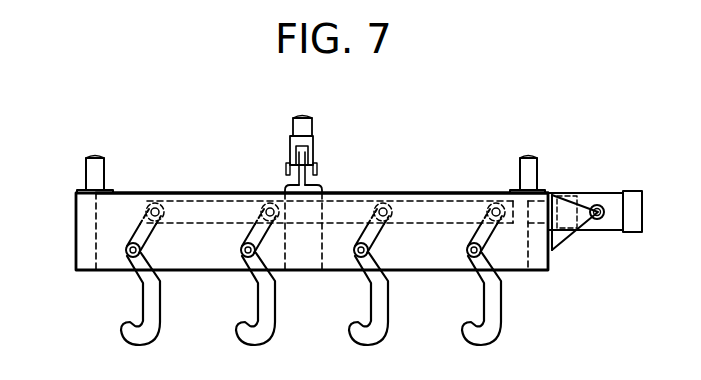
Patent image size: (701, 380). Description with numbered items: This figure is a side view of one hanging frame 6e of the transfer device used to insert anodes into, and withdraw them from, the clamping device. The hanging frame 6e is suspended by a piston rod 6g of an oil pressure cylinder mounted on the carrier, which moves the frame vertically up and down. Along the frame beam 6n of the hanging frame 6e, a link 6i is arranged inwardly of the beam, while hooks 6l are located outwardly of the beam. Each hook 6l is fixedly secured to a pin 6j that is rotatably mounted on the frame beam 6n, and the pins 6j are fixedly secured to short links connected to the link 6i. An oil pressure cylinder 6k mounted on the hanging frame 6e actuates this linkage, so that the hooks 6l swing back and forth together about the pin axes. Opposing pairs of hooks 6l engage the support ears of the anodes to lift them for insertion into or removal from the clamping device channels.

The hanging frame 6e is at (84, 222).
The frame beam 6n is at (130, 196).
The link 6i is at (433, 200).
The piston rod 6g is at (305, 130).
The oil pressure cylinder 6k is at (596, 230).
The pin 6j is at (141, 250).
The hook 6l is at (273, 318).